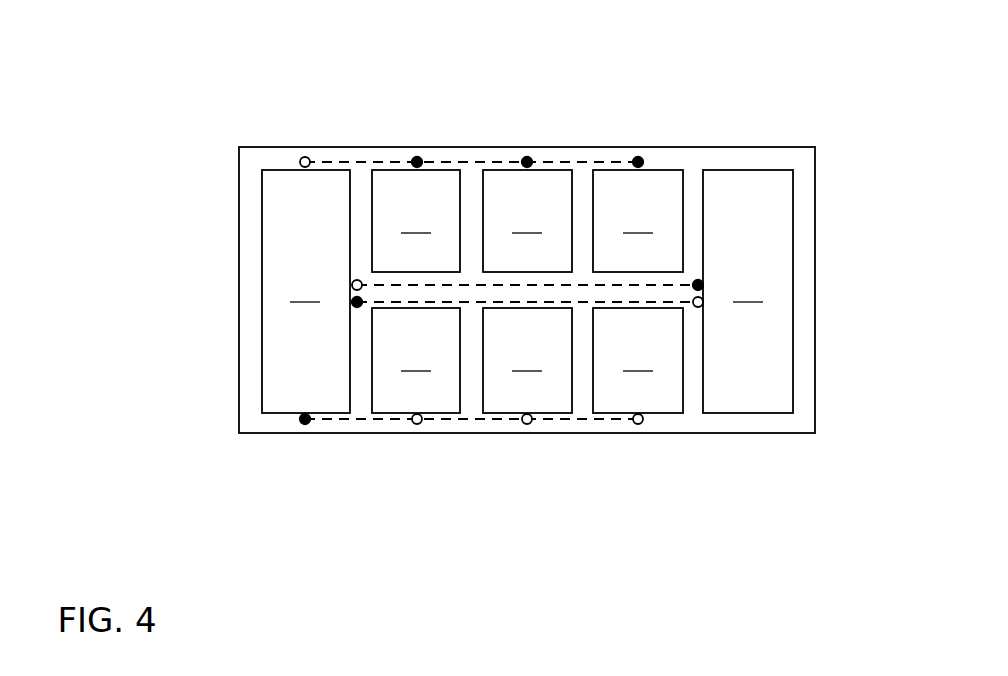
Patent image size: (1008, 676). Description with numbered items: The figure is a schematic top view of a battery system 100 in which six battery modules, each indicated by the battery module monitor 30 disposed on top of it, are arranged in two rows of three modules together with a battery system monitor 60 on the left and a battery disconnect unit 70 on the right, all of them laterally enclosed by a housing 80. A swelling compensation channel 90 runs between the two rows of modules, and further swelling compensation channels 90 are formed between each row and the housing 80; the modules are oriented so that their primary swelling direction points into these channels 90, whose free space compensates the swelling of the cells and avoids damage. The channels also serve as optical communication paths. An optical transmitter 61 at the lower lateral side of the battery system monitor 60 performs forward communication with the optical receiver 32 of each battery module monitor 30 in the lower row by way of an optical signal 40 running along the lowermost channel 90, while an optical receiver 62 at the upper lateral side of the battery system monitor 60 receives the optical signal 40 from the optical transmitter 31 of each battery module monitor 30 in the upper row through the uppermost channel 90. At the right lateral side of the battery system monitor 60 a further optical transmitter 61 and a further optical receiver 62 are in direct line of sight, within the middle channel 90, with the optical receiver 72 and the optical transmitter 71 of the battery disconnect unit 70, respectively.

The battery system 100 is at (782, 147).
The swelling compensation channel 90 is at (493, 272).
The battery system housing 80 is at (238, 190).
The battery system monitor (BSM) 60 is at (306, 291).
The battery disconnect unit (BDU) 70 is at (748, 291).
The battery module monitor (BMM) 30 is at (527, 291).
The optical signal 40 is at (437, 163).
The optical receiver of BSM 62 is at (305, 157).
The optical transmitter of BSM 61 is at (305, 424).
The optical transmitter of BMM 31 is at (417, 157).
The optical receiver of BMM 32 is at (417, 424).
The optical transmitter of BDU 71 is at (698, 280).
The optical receiver of BDU 72 is at (698, 307).